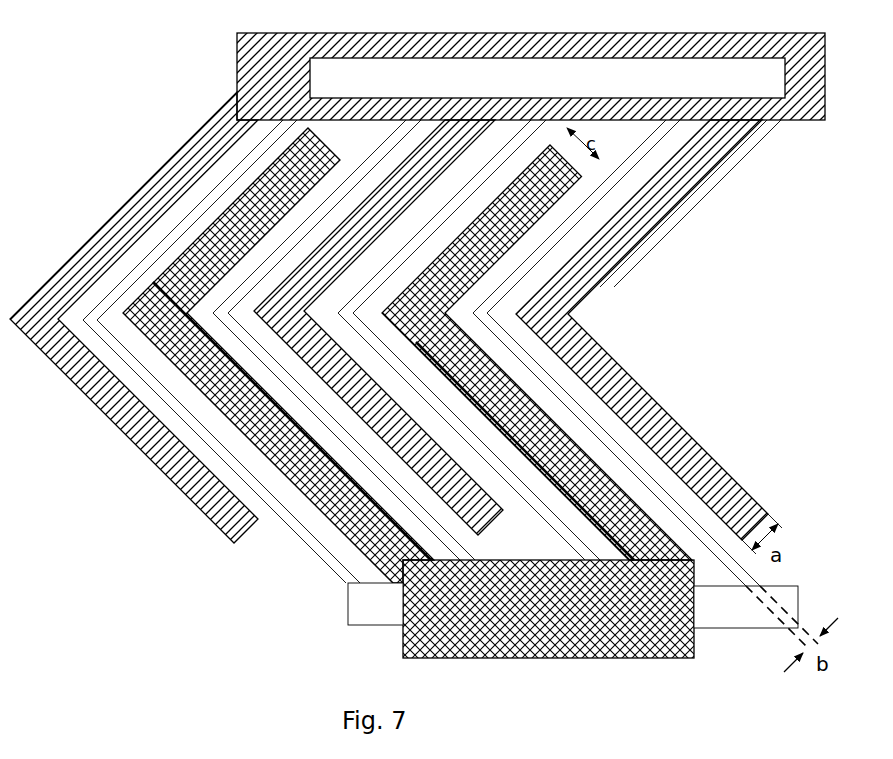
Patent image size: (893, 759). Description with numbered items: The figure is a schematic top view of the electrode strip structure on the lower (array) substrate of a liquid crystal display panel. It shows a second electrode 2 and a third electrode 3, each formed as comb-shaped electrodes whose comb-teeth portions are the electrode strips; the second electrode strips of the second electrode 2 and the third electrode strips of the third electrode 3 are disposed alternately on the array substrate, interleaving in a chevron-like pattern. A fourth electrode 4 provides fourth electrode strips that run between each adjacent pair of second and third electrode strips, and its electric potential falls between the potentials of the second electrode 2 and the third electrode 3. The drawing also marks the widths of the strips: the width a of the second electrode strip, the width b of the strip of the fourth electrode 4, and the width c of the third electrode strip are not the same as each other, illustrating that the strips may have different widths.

The second electrode 2 is at (417, 288).
The third electrode 3 is at (408, 393).
The fourth electrode 4 is at (432, 364).